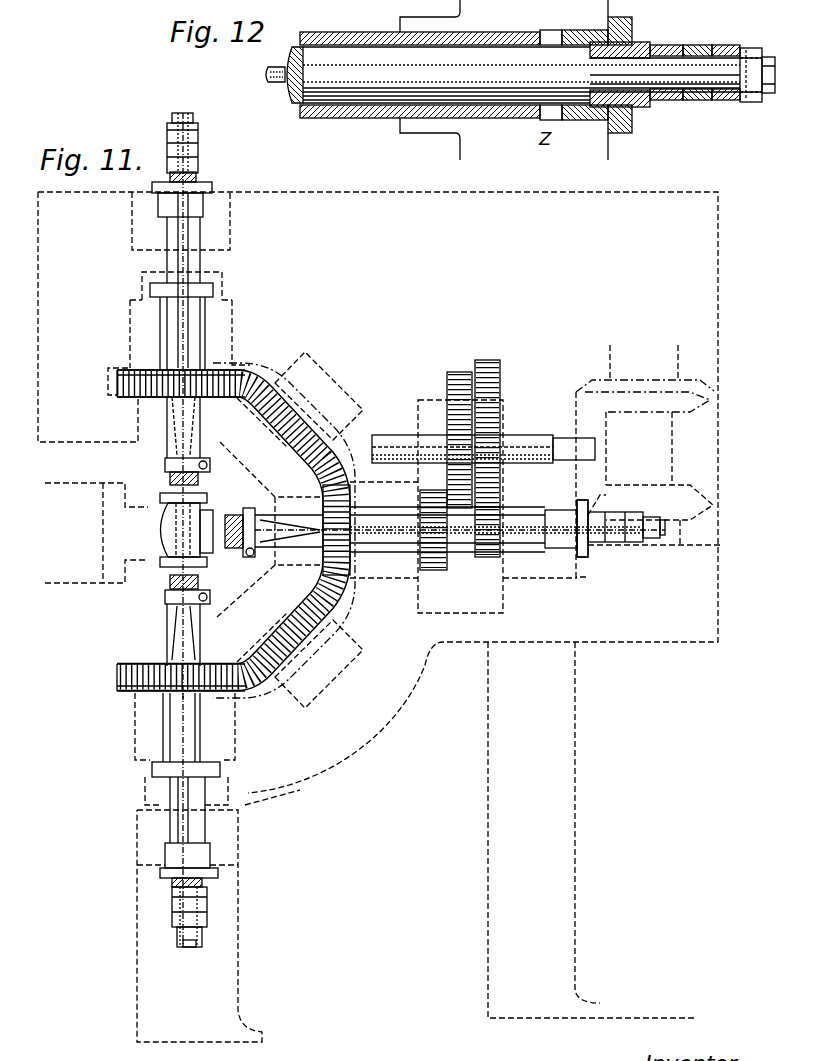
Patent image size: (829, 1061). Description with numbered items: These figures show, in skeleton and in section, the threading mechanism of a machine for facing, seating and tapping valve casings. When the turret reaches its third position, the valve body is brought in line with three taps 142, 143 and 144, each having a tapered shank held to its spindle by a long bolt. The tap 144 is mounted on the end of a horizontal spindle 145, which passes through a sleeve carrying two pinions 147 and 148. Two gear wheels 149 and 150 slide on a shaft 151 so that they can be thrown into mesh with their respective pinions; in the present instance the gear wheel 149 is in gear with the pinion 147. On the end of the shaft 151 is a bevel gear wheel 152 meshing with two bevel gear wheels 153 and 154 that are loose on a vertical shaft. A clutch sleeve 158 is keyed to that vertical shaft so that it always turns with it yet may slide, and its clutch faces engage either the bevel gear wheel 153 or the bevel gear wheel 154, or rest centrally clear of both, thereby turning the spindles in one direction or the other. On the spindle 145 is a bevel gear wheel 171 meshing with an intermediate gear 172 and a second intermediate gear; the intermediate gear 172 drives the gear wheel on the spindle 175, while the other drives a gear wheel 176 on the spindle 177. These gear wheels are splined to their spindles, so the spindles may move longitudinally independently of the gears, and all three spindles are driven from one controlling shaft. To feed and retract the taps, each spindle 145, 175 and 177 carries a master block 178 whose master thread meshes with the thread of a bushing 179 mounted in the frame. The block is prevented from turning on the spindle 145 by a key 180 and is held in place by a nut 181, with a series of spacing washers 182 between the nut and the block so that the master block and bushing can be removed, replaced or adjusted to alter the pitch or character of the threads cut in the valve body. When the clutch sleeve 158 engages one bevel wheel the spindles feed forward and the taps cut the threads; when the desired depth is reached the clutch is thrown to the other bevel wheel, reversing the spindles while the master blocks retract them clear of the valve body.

In FIG. 11, the tap 142 is at (210, 473).
In FIG. 11, the tap 143 is at (206, 582).
In FIG. 11, the tap 144 is at (246, 512).
In FIG. 12, the horizontal spindle 145 is at (549, 80).
In FIG. 11, the horizontal spindle 145 is at (296, 519).
In FIG. 11, the pinion 147 is at (490, 559).
In FIG. 11, the pinion 148 is at (435, 571).
In FIG. 11, the gear wheel 149 is at (485, 364).
In FIG. 11, the gear wheel 150 is at (458, 374).
In FIG. 11, the shaft 151 is at (521, 440).
In FIG. 11, the bevel gear wheel 152 is at (602, 441).
In FIG. 11, the bevel gear wheel 153 is at (645, 396).
In FIG. 11, the bevel gear wheel 154 is at (654, 515).
In FIG. 11, the clutch sleeve 158 is at (624, 484).
In FIG. 11, the bevel gear wheel 171 is at (348, 470).
In FIG. 11, the intermediate gear 172 is at (298, 421).
In FIG. 11, the spindle 175 is at (192, 258).
In FIG. 11, the gear wheel 176 is at (243, 692).
In FIG. 11, the spindle 177 is at (197, 804).
In FIG. 12, the master block 178 is at (640, 44).
In FIG. 11, the master block 178 is at (198, 179).
In FIG. 12, the bushing 179 is at (613, 37).
In FIG. 11, the bushing 179 is at (228, 368).
In FIG. 12, the key 180 is at (691, 61).
In FIG. 12, the nut 181 is at (751, 55).
In FIG. 12, the spacing washers 182 is at (716, 104).